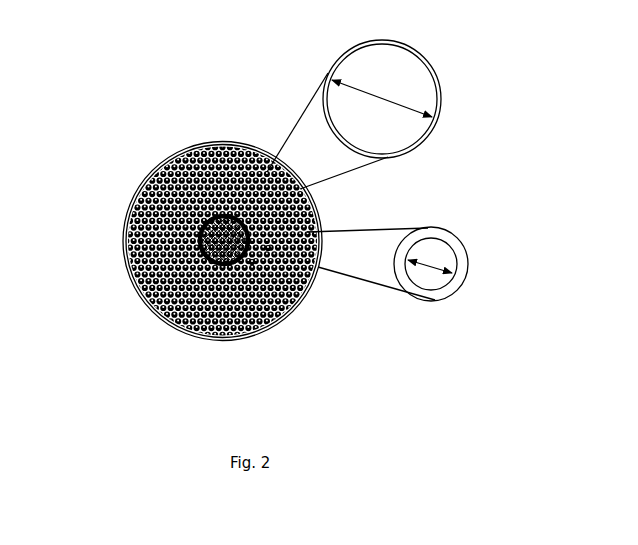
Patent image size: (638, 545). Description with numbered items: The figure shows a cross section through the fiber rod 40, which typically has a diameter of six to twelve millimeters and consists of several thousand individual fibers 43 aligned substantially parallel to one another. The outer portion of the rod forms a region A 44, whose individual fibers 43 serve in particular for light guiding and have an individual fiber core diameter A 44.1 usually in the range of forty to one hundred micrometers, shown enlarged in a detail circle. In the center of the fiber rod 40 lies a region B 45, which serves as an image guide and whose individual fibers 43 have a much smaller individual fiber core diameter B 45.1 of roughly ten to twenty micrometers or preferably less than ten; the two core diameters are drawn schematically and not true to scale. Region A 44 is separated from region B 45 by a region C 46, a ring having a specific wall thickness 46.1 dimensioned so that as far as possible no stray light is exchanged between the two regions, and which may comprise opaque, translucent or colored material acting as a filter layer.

The fiber rod 40 is at (156, 319).
The individual fibers 43 is at (426, 57).
The region A 44 is at (188, 332).
The individual fiber core diameter A 44.1 is at (380, 95).
The region B 45 is at (226, 265).
The individual fiber core diameter B 45.1 is at (430, 272).
The region C 46 is at (252, 264).
The wall thickness 46.1 is at (268, 250).